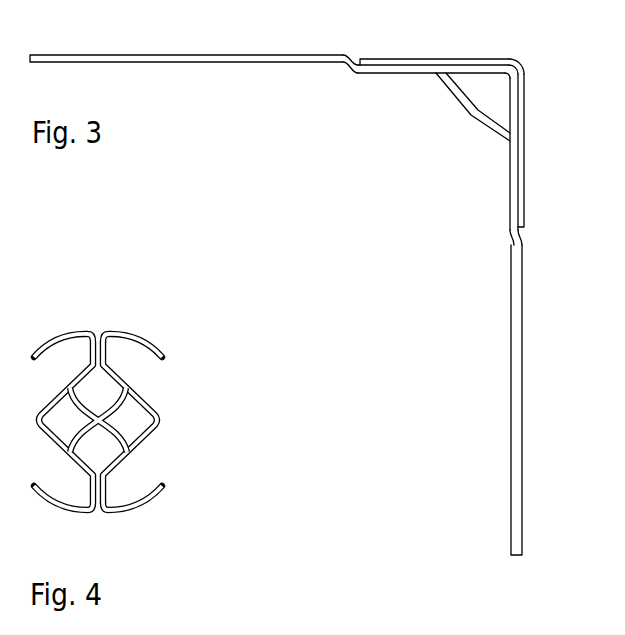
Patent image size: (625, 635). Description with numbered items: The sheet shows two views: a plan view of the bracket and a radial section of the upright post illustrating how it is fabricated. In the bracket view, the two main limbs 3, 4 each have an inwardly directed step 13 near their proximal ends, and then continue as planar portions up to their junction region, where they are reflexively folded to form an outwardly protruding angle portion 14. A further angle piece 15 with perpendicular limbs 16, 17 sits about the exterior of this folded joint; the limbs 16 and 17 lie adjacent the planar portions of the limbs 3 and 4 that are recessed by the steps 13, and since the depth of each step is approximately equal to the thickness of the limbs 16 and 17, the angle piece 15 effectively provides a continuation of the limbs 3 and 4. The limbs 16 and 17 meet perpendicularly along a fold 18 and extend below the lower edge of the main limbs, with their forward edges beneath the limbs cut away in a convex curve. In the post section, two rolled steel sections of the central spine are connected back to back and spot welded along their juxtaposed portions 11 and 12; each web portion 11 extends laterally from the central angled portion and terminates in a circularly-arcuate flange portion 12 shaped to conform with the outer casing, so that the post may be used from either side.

In FIG. 3, the limb 3 is at (153, 55).
In FIG. 3, the limb 4 is at (515, 364).
In FIG. 4, the web portion 11 is at (107, 355).
In FIG. 4, the arcuate flange portion 12 is at (102, 493).
In FIG. 3, the step 13 is at (347, 70).
In FIG. 3, the angle portion 14 is at (478, 123).
In FIG. 3, the angle piece 15 is at (469, 62).
In FIG. 3, the limb 16 is at (382, 63).
In FIG. 3, the limb 17 is at (517, 140).
In FIG. 3, the fold 18 is at (522, 63).